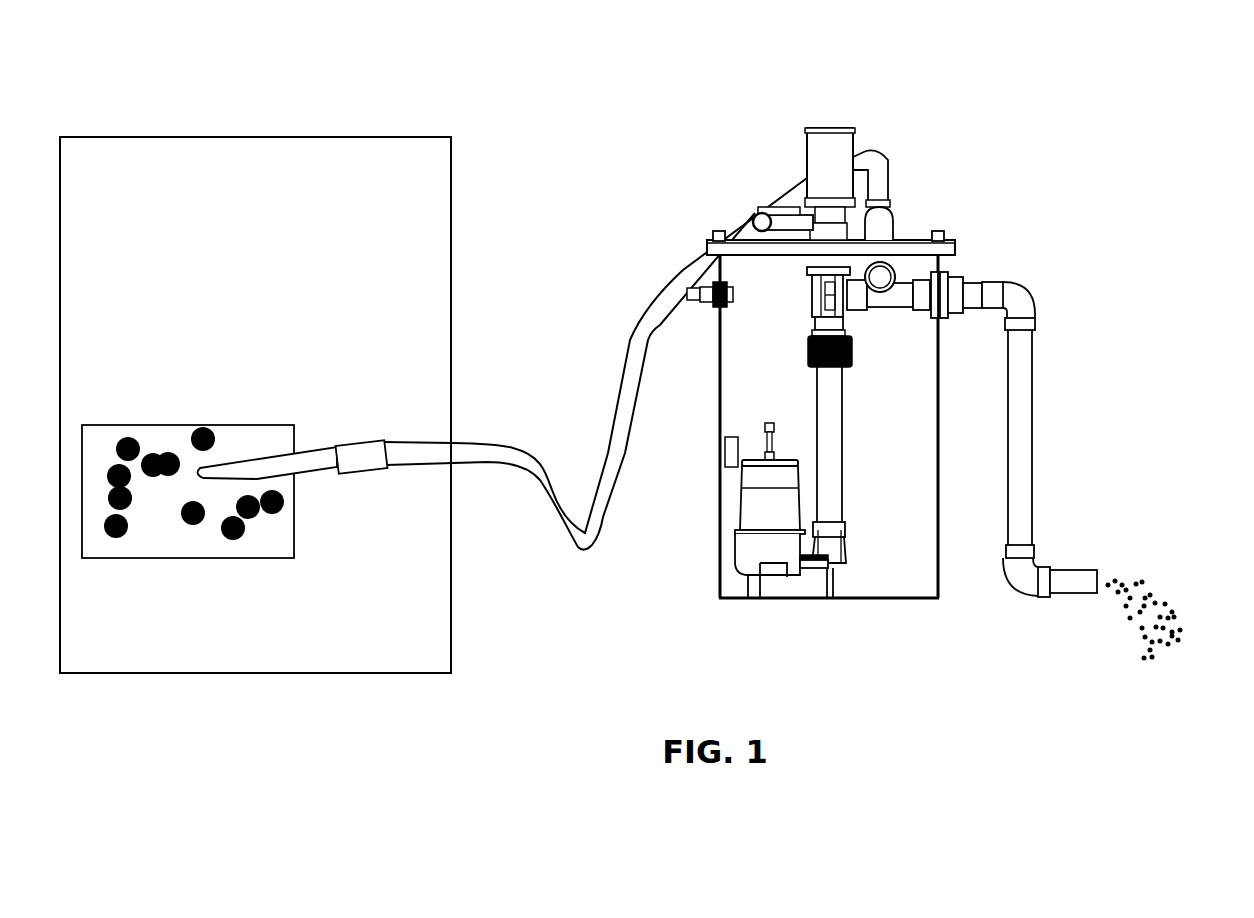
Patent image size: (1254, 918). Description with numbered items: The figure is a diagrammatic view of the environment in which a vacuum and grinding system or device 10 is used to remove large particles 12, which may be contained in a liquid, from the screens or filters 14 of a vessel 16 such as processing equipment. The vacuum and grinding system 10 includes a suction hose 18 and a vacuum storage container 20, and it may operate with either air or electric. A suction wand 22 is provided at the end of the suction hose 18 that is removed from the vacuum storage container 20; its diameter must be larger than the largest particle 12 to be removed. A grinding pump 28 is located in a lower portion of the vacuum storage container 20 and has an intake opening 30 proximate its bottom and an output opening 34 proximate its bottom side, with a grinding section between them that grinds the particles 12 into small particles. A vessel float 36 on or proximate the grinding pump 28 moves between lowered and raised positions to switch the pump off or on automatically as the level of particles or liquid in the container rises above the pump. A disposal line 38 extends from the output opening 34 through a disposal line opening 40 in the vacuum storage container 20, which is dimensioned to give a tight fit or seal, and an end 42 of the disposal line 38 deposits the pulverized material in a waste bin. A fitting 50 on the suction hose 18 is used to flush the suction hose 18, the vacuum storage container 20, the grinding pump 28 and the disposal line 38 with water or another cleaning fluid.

The vacuum and grinding system 10 is at (690, 344).
The large particles 12 is at (258, 510).
The screens or filters 14 is at (224, 513).
The vessel 16 is at (440, 202).
The suction hose 18 is at (592, 562).
The vacuum storage container 20 is at (913, 394).
The suction wand 22 is at (313, 455).
The grinding pump 28 is at (774, 535).
The intake opening 30 is at (786, 578).
The output opening 34 is at (806, 566).
The vessel float 36 is at (724, 448).
The disposal line 38 is at (838, 450).
The disposal line opening 40 is at (940, 320).
The end of the disposal line 42 is at (1088, 572).
The fitting 50 is at (388, 434).